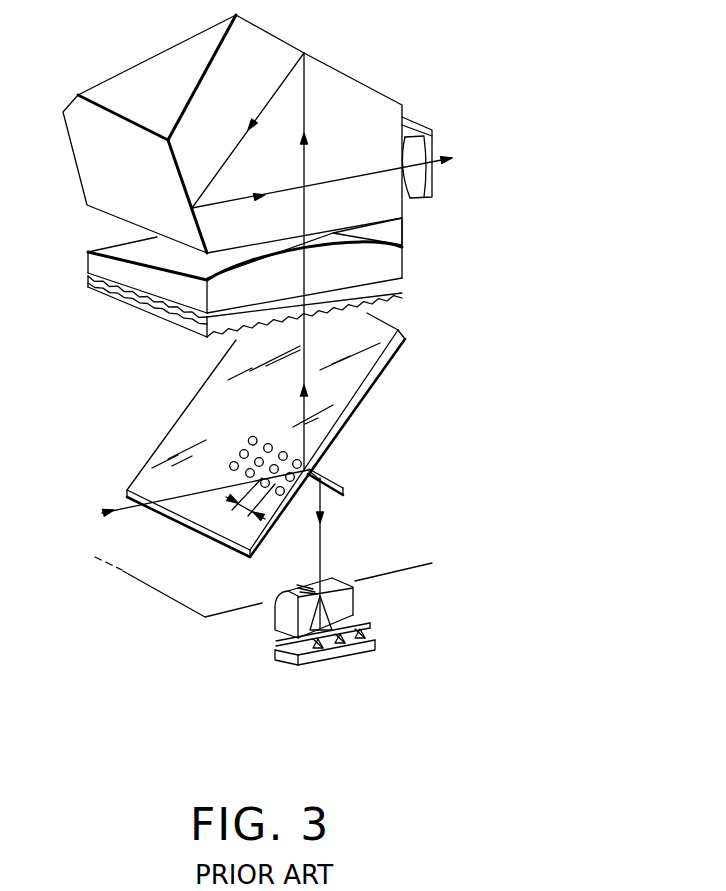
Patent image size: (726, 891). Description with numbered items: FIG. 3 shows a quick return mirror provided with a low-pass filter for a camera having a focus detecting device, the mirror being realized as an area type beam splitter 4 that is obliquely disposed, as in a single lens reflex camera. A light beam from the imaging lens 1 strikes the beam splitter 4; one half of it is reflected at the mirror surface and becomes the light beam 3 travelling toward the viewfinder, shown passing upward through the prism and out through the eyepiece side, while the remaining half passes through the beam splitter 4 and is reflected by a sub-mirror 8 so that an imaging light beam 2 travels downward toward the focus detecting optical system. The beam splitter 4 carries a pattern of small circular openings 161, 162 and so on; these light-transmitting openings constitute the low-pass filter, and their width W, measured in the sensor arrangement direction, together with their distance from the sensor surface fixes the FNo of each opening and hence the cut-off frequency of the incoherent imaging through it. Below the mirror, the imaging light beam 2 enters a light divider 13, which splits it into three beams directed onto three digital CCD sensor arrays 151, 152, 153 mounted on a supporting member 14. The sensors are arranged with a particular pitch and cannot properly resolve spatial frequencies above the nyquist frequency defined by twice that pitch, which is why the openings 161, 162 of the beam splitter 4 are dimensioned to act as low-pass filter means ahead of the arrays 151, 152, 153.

The light beam from the imaging lens 1 is at (128, 514).
The imaging light beam 2 is at (322, 547).
The light beam travelling toward the viewfinder 3 is at (307, 160).
The area type beam splitter 4 is at (397, 330).
The sub-mirror 8 is at (345, 487).
The light divider 13 is at (347, 602).
The detector plate 14 is at (373, 627).
The CCD sensor array 151 is at (318, 662).
The CCD sensor array 152 is at (340, 652).
The CCD sensor array 153 is at (360, 645).
The circular opening 161 is at (250, 437).
The circular opening 162 is at (268, 443).
The width of opening W is at (250, 507).